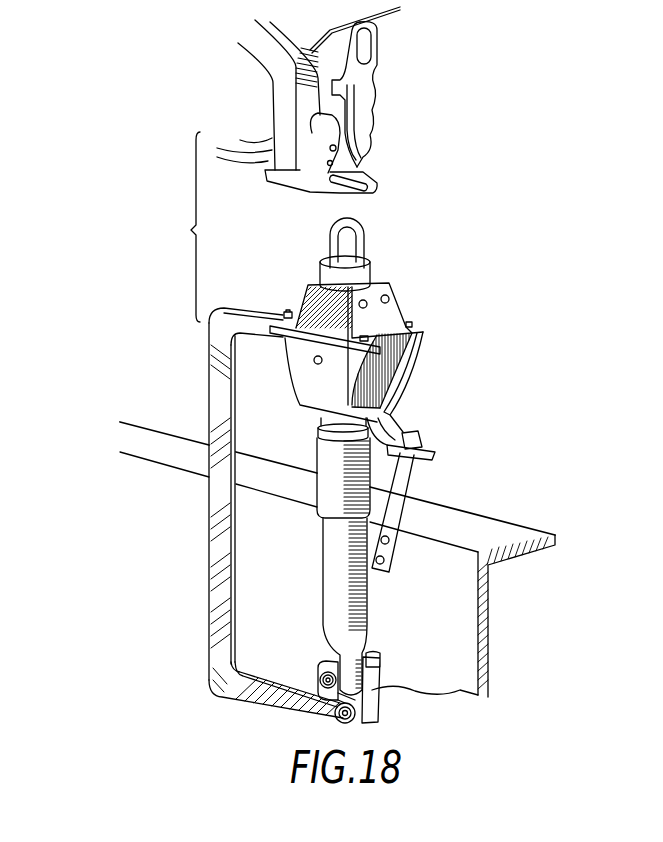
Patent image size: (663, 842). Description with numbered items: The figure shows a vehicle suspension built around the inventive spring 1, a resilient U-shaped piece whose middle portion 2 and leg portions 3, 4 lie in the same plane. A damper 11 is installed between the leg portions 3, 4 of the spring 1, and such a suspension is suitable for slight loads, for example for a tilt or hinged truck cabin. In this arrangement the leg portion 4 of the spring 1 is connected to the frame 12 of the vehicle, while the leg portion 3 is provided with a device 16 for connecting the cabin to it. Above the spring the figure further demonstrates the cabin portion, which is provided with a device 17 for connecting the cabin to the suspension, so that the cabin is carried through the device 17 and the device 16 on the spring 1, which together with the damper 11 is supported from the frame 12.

The spring 1 is at (206, 535).
The middle portion 2 is at (215, 399).
The leg portion 3 is at (257, 327).
The leg portion 4 is at (263, 694).
The damper 11 is at (333, 558).
The frame 12 is at (508, 529).
The device for connecting the cabin 16 is at (389, 378).
The device for connecting the cabin to the suspension 17 is at (366, 154).